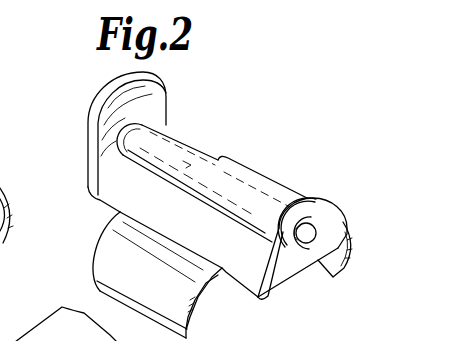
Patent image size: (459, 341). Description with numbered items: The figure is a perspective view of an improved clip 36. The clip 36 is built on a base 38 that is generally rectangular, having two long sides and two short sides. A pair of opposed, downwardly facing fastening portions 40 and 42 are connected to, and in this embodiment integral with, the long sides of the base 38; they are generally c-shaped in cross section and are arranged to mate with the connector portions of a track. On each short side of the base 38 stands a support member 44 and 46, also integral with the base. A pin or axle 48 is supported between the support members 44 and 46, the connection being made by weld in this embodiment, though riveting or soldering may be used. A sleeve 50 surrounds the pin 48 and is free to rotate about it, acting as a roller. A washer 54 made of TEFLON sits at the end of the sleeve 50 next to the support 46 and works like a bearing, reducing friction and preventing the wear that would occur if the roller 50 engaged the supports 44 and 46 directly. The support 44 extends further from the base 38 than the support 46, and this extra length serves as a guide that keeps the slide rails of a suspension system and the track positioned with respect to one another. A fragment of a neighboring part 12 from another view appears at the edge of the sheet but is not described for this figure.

The housing (adjacent figure, partial) 12 is at (8, 234).
The clip 36 is at (280, 160).
The base 38 is at (244, 268).
The fastening portion 40 is at (122, 248).
The fastening portion 42 is at (350, 266).
The support member 44 is at (107, 118).
The support member 46 is at (337, 215).
The pin 48 is at (306, 243).
The sleeve 50 is at (186, 150).
The washer 54 is at (313, 197).